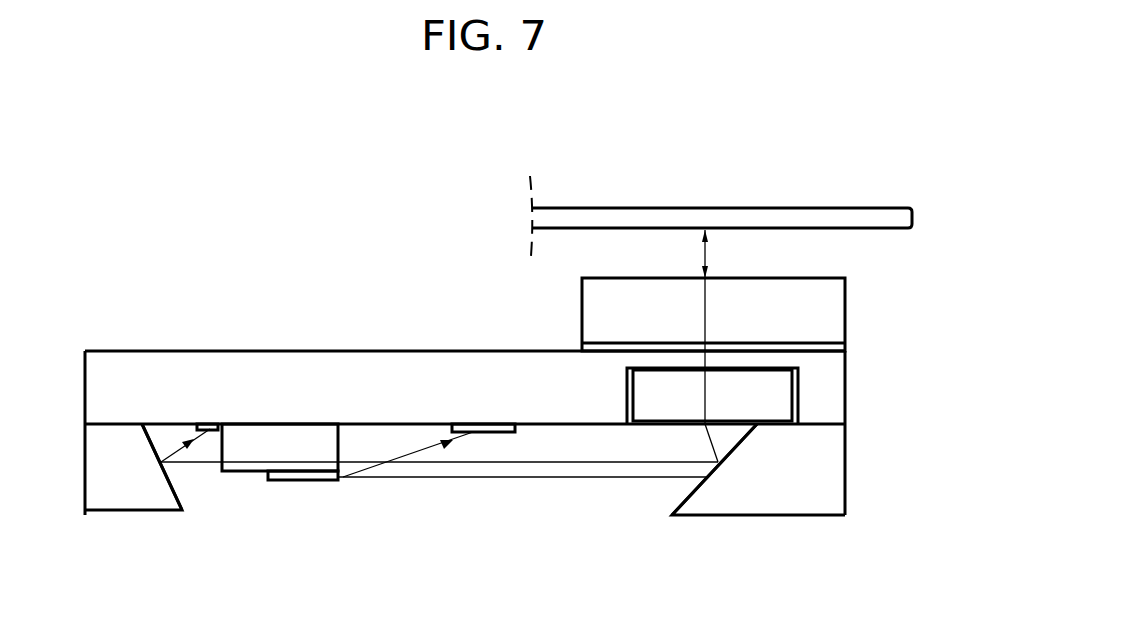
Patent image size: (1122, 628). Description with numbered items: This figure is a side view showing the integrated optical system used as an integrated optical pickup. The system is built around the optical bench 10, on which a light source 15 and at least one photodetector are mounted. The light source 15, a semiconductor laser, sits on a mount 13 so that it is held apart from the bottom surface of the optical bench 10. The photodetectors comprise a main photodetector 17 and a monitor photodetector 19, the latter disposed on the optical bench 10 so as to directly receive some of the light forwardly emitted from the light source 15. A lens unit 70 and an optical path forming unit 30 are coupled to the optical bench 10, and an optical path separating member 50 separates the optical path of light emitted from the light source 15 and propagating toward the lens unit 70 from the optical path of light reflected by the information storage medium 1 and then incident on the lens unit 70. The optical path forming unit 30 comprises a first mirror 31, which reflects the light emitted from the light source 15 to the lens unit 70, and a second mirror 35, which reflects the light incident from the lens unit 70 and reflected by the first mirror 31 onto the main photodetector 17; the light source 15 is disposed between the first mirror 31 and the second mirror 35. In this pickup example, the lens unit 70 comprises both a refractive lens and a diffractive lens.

The information storage medium 1 is at (897, 222).
The optical bench 10 is at (240, 342).
The mount 13 is at (258, 448).
The light source 15 is at (307, 478).
The main photodetector 17 is at (212, 431).
The monitor photodetector 19 is at (497, 433).
The optical path forming unit 30 is at (852, 478).
The first mirror 31 is at (682, 500).
The second mirror 35 is at (183, 501).
The optical path separating member 50 is at (661, 407).
The lens unit 70 is at (815, 322).